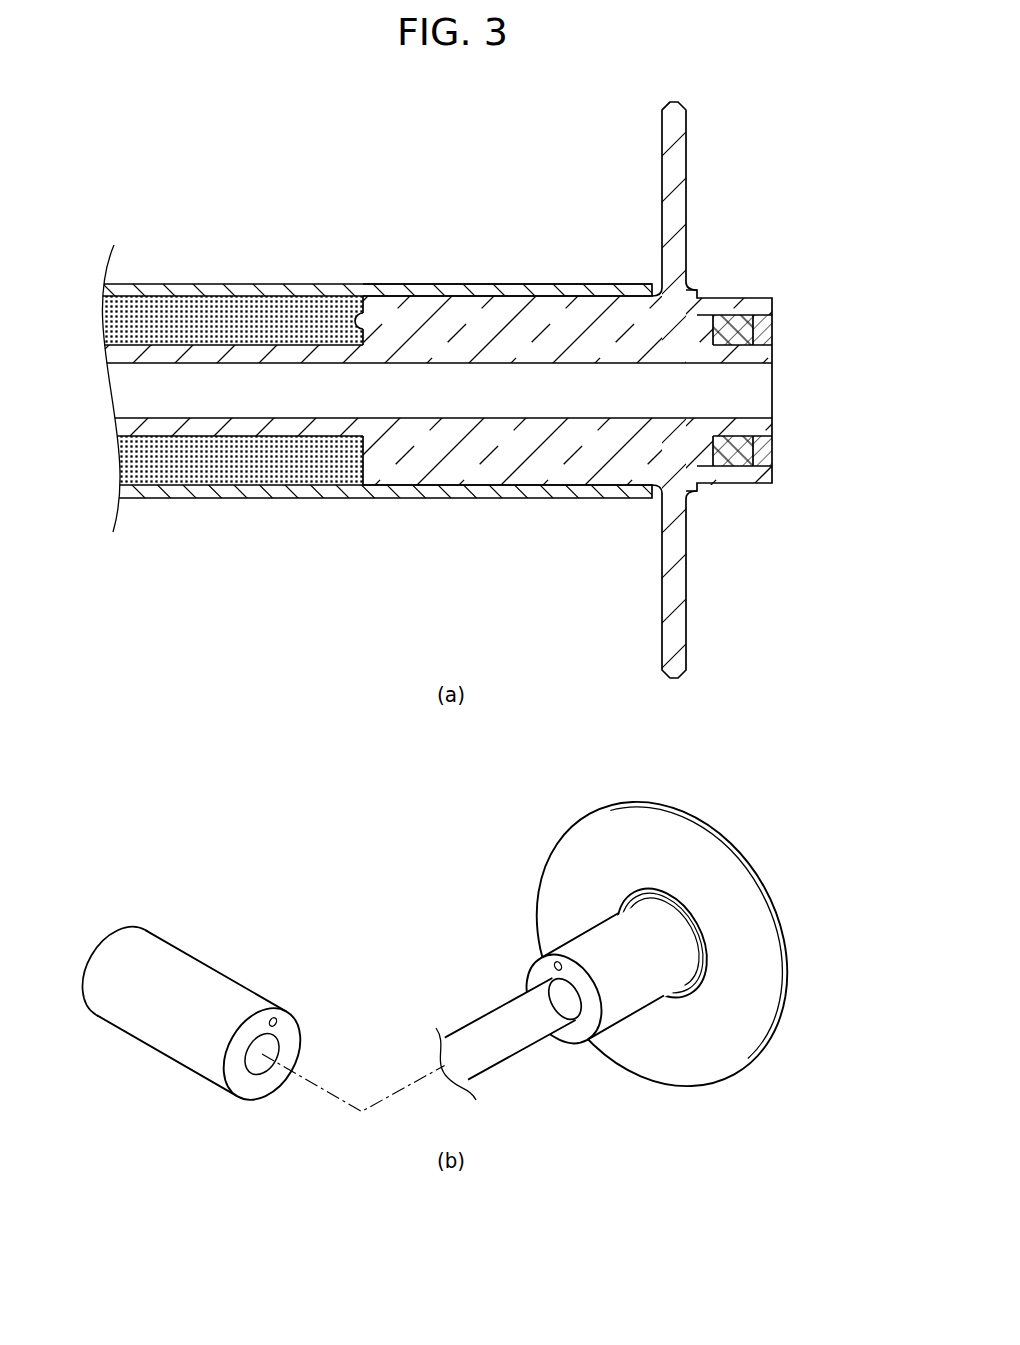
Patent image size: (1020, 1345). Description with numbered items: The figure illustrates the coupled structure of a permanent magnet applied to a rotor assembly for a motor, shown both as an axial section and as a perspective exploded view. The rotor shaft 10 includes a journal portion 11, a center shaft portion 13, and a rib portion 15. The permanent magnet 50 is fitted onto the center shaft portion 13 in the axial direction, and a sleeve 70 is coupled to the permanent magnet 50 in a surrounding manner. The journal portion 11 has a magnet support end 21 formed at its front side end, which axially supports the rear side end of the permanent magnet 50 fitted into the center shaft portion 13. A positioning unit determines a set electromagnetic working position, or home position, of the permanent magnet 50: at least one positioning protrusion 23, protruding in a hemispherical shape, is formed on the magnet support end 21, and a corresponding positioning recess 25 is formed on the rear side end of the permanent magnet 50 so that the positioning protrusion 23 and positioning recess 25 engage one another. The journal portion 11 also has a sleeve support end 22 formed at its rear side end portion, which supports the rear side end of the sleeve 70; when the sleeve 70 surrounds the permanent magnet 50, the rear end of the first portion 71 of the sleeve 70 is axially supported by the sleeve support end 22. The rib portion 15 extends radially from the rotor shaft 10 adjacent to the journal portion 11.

The rotor shaft 10 is at (327, 437).
The journal portion 11 is at (507, 307).
The center shaft portion 13 is at (237, 346).
The rib portion 15 is at (688, 175).
The magnet support end 21 is at (362, 300).
The sleeve support end 22 is at (652, 290).
The positioning protrusion 23 is at (360, 322).
The positioning recess 25 is at (345, 312).
The permanent magnet 50 is at (232, 489).
The sleeve 70 is at (176, 283).
The first portion 71 is at (458, 287).